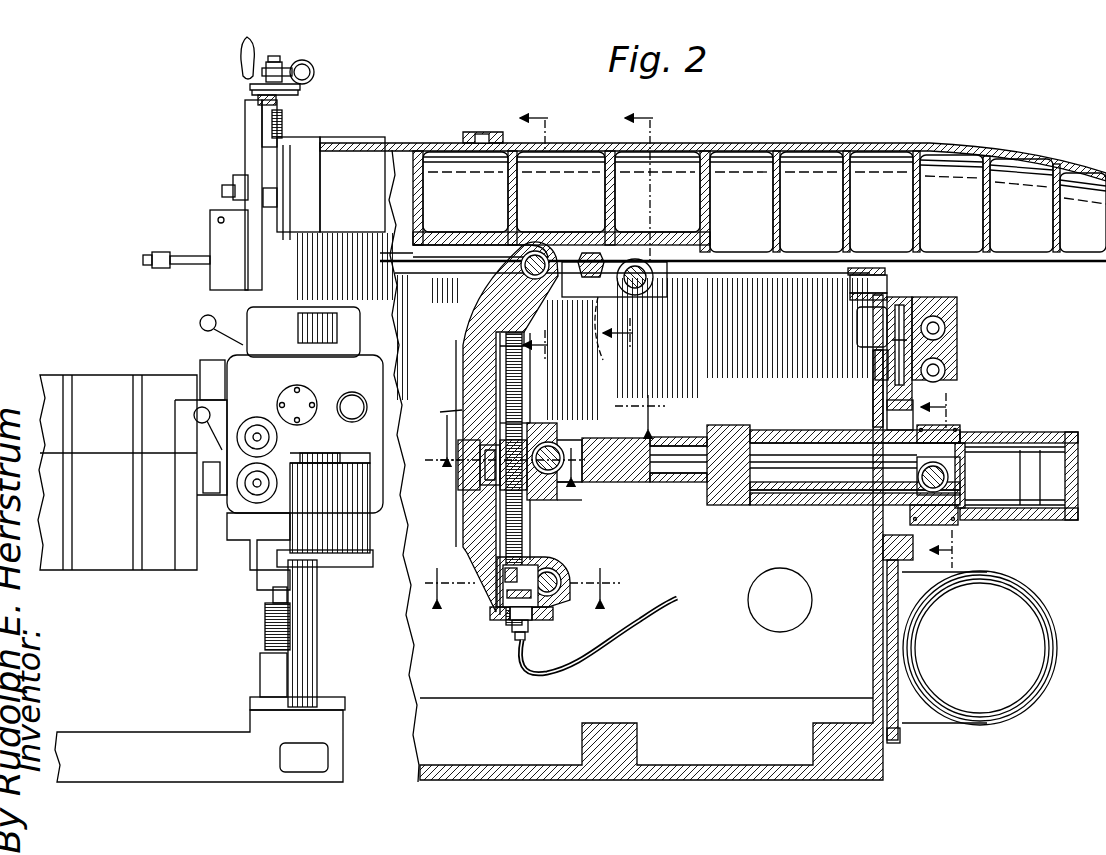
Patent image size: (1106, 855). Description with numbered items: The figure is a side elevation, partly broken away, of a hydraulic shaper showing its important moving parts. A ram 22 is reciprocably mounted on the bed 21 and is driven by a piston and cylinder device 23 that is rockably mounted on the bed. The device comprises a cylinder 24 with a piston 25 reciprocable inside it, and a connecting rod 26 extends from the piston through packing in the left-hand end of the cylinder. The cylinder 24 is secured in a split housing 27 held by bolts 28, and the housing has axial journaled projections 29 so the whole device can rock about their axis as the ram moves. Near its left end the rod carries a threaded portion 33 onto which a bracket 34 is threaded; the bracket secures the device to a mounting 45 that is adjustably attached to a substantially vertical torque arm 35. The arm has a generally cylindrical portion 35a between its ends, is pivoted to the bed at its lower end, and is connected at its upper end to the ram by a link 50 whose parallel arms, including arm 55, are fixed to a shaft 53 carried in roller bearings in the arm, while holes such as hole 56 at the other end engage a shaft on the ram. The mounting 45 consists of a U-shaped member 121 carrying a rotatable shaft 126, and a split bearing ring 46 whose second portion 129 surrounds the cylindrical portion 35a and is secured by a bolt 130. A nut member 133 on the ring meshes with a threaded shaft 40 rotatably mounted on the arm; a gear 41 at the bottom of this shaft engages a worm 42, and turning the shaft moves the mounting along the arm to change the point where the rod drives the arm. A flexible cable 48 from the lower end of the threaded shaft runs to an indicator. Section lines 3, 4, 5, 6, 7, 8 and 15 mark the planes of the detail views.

The section line 3- 3 is at (945, 480).
The section line 4- 4 is at (522, 573).
The section line 5- 5 is at (211, 409).
The section line 6- 6 is at (434, 470).
The section line 7- 7 is at (536, 231).
The section line 8- 8 is at (628, 226).
The section line 15- 15 is at (549, 427).
The bed 21 is at (902, 496).
The ram 22 is at (885, 151).
The piston and cylinder device 23 is at (1023, 432).
The cylinder 24 is at (1018, 505).
The piston 25 is at (968, 500).
The connecting rod 26 is at (668, 483).
The split housing 27 is at (958, 522).
The bolts 28 is at (950, 425).
The journaled projections 29 is at (918, 477).
The threaded portion 33 is at (620, 485).
The bracket 34 is at (566, 450).
The torque arm 35 is at (460, 350).
The cylindrical portion 35a is at (441, 410).
The threaded shaft 40 is at (522, 525).
The gear 41 is at (500, 590).
The worm 42 is at (568, 572).
The mounting 45 is at (545, 423).
The split bearing ring 46 is at (458, 500).
The flexible cable 48 is at (628, 637).
The link 50 is at (570, 292).
The shaft 53 is at (541, 256).
The link arm 55 is at (598, 330).
The hole 56 is at (668, 270).
The U-shaped member 121 is at (565, 486).
The rotatable shaft 126 is at (560, 442).
The second portion 129 is at (440, 455).
The bolt 130 is at (590, 505).
The nut member 133 is at (526, 420).